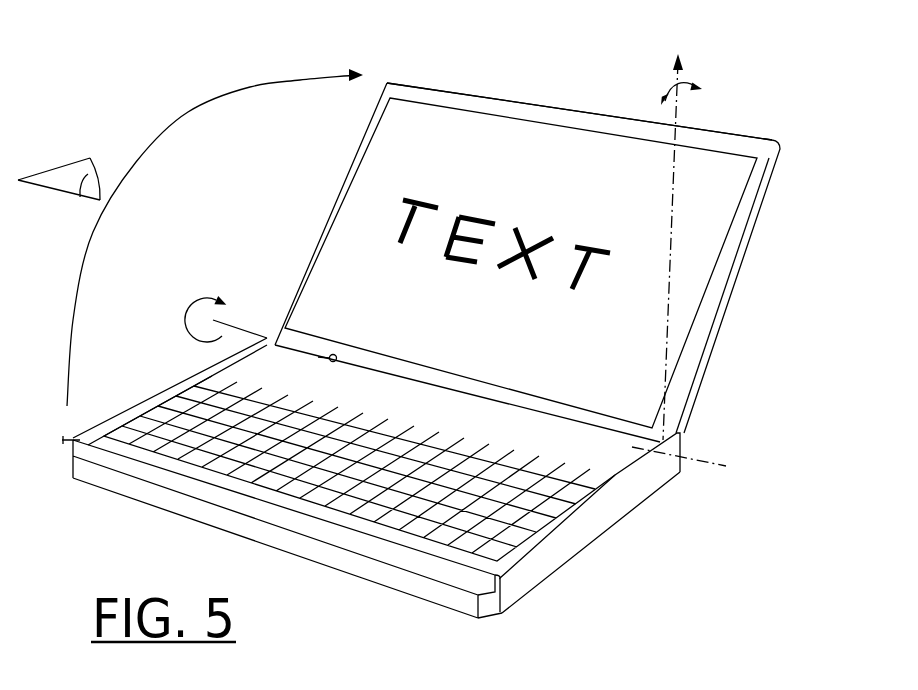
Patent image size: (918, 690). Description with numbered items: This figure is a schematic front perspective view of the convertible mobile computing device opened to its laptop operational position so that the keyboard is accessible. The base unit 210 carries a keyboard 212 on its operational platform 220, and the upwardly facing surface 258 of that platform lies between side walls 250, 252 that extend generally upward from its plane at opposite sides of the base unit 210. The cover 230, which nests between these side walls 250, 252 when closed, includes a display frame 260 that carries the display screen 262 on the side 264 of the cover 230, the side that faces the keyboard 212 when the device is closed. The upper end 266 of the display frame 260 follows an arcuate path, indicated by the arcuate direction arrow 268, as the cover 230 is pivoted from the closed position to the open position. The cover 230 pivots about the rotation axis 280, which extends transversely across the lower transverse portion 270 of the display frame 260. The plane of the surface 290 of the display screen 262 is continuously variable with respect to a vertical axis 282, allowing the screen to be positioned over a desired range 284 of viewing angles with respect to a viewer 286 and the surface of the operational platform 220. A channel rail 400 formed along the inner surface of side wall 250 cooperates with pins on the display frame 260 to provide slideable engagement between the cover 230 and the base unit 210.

The base unit 210 is at (638, 492).
The keyboard 212 is at (500, 523).
The operational platform 220 is at (343, 545).
The cover 230 is at (714, 110).
The side wall 250 is at (147, 393).
The side wall 252 is at (500, 585).
The upwardly facing surface 258 is at (432, 409).
The display frame 260 is at (781, 157).
The display screen 262 is at (510, 155).
The side of the cover 264 is at (718, 212).
The upper end of the display frame 266 is at (458, 83).
The arcuate direction arrow 268 is at (187, 133).
The lower transverse portion of the display frame 270 is at (318, 355).
The rotation axis 280 is at (247, 333).
The vertical axis 282 is at (683, 73).
The range of viewing angles 284 is at (667, 92).
The viewer 286 is at (55, 170).
The surface of the display screen 290 is at (615, 188).
The channel rail 400 is at (62, 438).